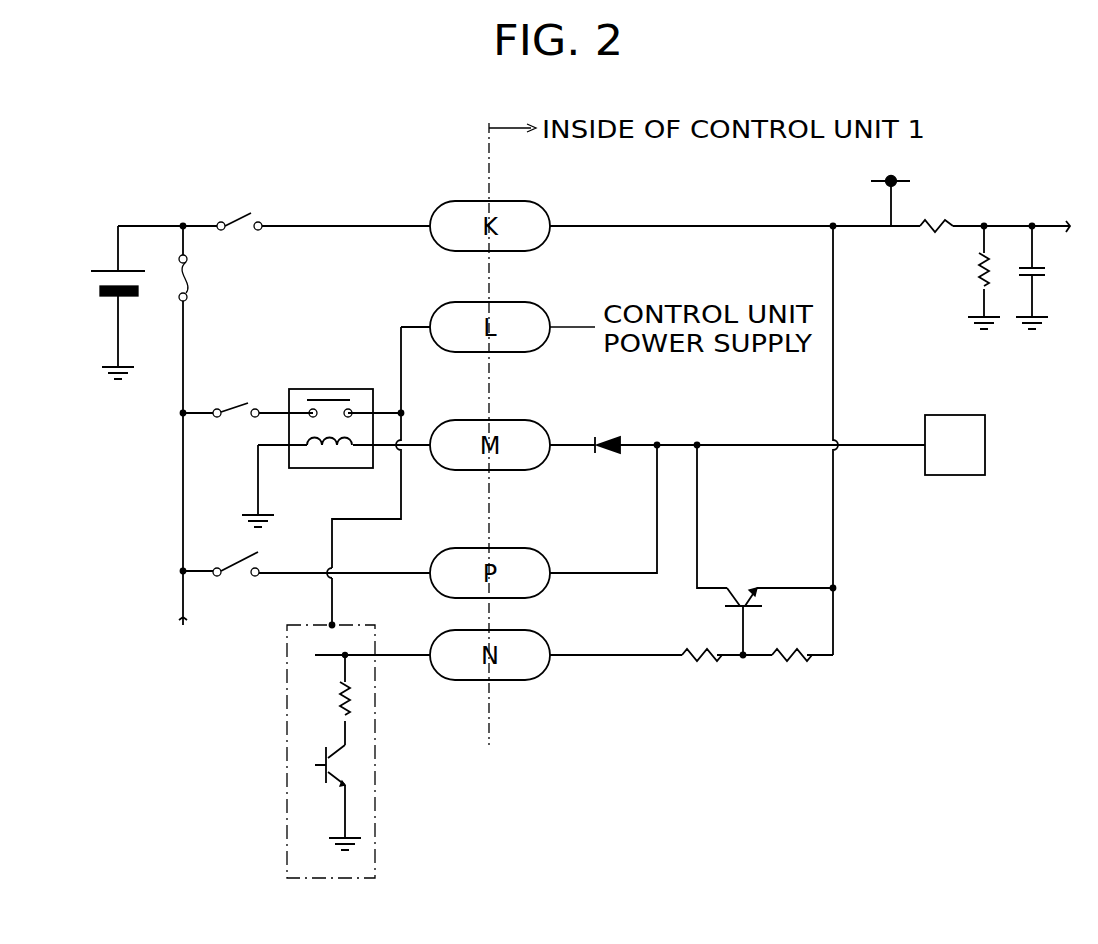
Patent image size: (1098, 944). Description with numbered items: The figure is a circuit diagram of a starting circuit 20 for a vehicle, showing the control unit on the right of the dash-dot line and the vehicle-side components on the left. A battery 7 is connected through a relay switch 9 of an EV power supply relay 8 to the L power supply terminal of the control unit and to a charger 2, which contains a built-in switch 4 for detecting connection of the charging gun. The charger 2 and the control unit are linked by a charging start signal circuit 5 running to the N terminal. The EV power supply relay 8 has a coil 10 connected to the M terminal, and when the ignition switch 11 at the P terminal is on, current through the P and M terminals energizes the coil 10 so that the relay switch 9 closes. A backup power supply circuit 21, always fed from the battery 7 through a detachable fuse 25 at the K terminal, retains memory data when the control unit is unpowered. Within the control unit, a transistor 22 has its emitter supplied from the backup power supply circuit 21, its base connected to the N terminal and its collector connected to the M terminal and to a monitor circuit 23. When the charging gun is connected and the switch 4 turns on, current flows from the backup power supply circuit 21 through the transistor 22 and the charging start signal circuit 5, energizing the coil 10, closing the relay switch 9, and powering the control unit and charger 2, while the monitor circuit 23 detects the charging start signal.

The charger 2 is at (326, 751).
The switch 4 is at (322, 752).
The charging start signal circuit 5 is at (403, 660).
The battery 7 is at (95, 281).
The EV power supply relay 8 is at (336, 426).
The relay switch 9 is at (332, 398).
The coil 10 is at (313, 450).
The ignition switch 11 is at (240, 558).
The starting circuit 20 is at (766, 443).
The backup power supply circuit 21 is at (866, 230).
The transistor 22 is at (745, 565).
The monitor circuit 23 is at (990, 430).
The fuse 25 is at (238, 214).